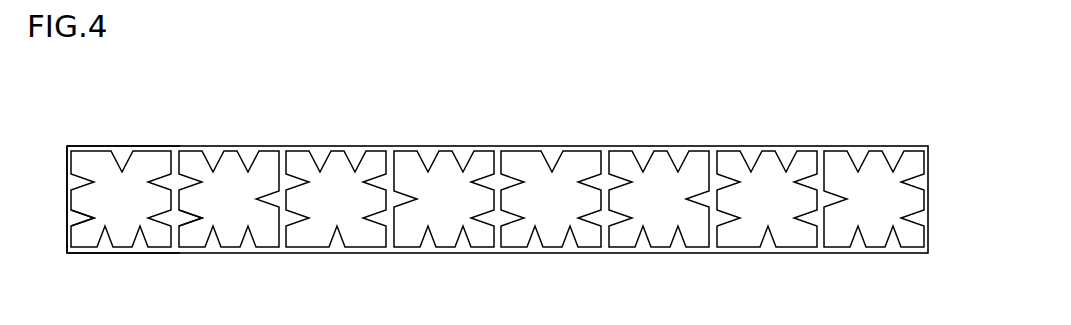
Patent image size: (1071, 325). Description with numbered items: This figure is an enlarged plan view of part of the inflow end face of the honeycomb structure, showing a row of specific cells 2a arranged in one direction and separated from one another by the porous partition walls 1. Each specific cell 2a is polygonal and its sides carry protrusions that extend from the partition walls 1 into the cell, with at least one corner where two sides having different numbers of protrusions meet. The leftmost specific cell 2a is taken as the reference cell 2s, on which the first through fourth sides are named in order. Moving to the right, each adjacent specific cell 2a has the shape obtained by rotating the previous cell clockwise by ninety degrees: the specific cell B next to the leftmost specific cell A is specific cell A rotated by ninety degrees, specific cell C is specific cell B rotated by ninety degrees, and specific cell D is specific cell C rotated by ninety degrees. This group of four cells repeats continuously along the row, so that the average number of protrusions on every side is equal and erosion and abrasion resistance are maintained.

The partition wall 1 is at (173, 167).
The specific cell 2a is at (497, 163).
The specific cell A is at (138, 167).
The specific cell B is at (263, 175).
The specific cell C is at (337, 173).
The specific cell D is at (445, 173).
The reference cell 2s is at (108, 217).